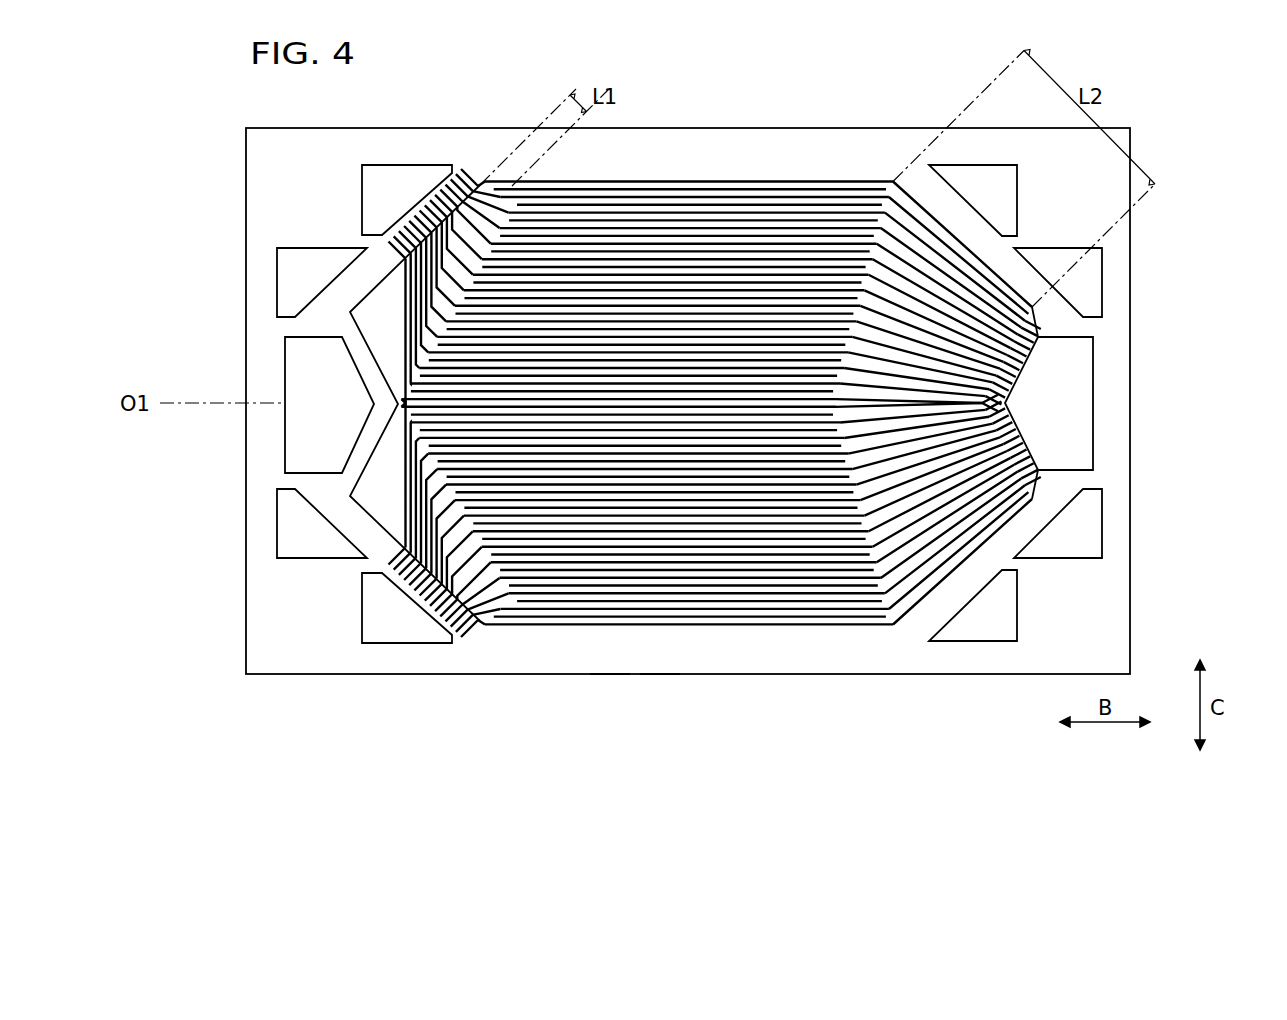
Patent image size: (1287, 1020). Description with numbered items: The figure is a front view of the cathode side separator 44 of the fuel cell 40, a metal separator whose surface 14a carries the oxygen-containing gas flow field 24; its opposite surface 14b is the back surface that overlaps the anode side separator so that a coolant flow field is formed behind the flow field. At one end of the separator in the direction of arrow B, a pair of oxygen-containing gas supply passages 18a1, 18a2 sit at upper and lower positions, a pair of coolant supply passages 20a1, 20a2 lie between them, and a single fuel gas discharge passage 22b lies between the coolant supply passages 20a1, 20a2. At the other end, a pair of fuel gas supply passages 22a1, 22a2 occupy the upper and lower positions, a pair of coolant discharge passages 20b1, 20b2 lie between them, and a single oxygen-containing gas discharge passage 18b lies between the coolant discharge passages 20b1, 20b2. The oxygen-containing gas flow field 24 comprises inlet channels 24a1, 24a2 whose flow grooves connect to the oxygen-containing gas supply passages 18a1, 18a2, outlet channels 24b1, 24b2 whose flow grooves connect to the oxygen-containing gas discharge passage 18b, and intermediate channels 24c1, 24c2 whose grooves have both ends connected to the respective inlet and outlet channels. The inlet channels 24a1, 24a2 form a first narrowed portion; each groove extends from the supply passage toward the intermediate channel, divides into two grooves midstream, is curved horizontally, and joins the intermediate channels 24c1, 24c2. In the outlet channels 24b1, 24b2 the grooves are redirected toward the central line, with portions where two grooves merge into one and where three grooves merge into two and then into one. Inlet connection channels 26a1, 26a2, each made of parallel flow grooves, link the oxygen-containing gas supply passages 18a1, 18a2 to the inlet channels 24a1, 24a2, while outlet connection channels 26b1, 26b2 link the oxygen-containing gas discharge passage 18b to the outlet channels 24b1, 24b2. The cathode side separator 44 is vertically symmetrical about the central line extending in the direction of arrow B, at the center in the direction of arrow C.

The surface 14a is at (608, 660).
The surface 14b is at (660, 657).
The oxygen-containing gas supply passage 18a1 is at (380, 203).
The oxygen-containing gas supply passage 18a2 is at (383, 603).
The oxygen-containing gas discharge passage 18b is at (1049, 403).
The coolant supply passage 20a1 is at (290, 263).
The coolant supply passage 20a2 is at (290, 548).
The coolant discharge passage 20b1 is at (1095, 262).
The coolant discharge passage 20b2 is at (1095, 545).
The fuel gas supply passage 22a1 is at (995, 203).
The fuel gas supply passage 22a2 is at (995, 603).
The fuel gas discharge passage 22b is at (329, 405).
The oxygen-containing gas flow field 24 is at (692, 406).
The inlet channel 24a1 is at (415, 323).
The inlet channel 24a2 is at (450, 520).
The outlet channel 24b1 is at (1005, 312).
The outlet channel 24b2 is at (1005, 494).
The intermediate channel 24c1 is at (762, 210).
The intermediate channel 24c2 is at (765, 600).
The inlet connection channel 26a1 is at (463, 177).
The inlet connection channel 26a2 is at (462, 637).
The outlet connection channel 26b1 is at (1023, 349).
The outlet connection channel 26b2 is at (1023, 457).
The fuel cell 40 is at (688, 401).
The cathode side separator 44 is at (688, 356).